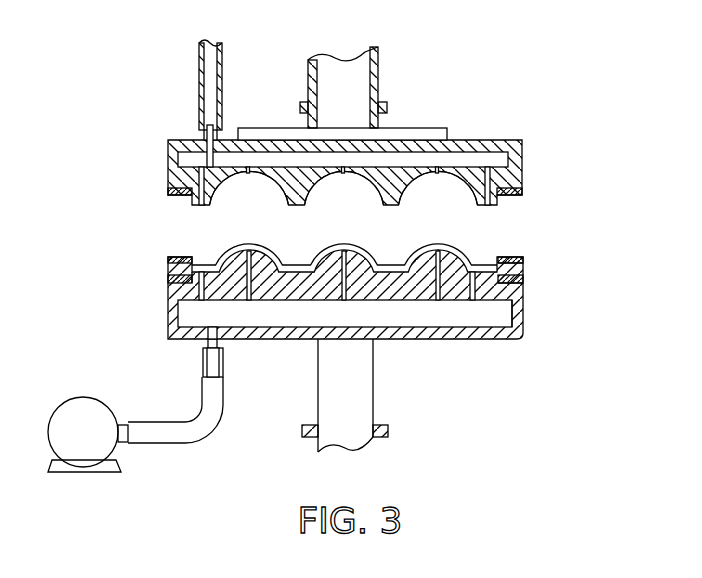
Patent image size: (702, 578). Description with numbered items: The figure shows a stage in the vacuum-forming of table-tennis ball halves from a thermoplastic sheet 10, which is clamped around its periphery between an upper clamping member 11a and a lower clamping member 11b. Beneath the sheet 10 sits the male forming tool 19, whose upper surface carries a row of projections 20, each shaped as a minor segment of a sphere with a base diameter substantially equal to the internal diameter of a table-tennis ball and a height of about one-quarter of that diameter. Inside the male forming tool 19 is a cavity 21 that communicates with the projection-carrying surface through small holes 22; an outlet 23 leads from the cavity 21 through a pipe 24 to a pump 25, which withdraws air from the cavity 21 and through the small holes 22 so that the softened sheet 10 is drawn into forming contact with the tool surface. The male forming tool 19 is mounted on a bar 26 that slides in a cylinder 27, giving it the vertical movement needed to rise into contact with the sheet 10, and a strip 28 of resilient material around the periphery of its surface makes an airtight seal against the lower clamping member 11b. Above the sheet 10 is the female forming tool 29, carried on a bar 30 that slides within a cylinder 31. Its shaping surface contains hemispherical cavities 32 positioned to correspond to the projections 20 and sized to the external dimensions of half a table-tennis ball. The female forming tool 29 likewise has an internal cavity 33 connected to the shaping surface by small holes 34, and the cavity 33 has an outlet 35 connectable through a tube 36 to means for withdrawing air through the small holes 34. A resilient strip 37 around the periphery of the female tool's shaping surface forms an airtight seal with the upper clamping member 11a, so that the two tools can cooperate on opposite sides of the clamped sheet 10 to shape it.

The sheet 10 is at (522, 258).
The upper clamping member 11a is at (525, 263).
The lower clamping member 11b is at (525, 281).
The male forming tool 19 is at (520, 333).
The projections 20 is at (260, 262).
The cavity 21 is at (466, 318).
The small holes 22 is at (248, 272).
The outlet 23 is at (200, 343).
The pipe 24 is at (183, 437).
The pump 25 is at (88, 434).
The bar 26 is at (357, 404).
The cylinder 27 is at (388, 430).
The strip of resilient material 28 is at (172, 288).
The female forming tool 29 is at (172, 170).
The bar 30 is at (353, 92).
The cylinder 31 is at (378, 50).
The hemispherical cavities 32 is at (279, 186).
The internal cavity 33 is at (460, 146).
The small holes 34 is at (203, 207).
The outlet 35 is at (212, 128).
The tube 36 is at (222, 58).
The resilient strip 37 is at (168, 192).